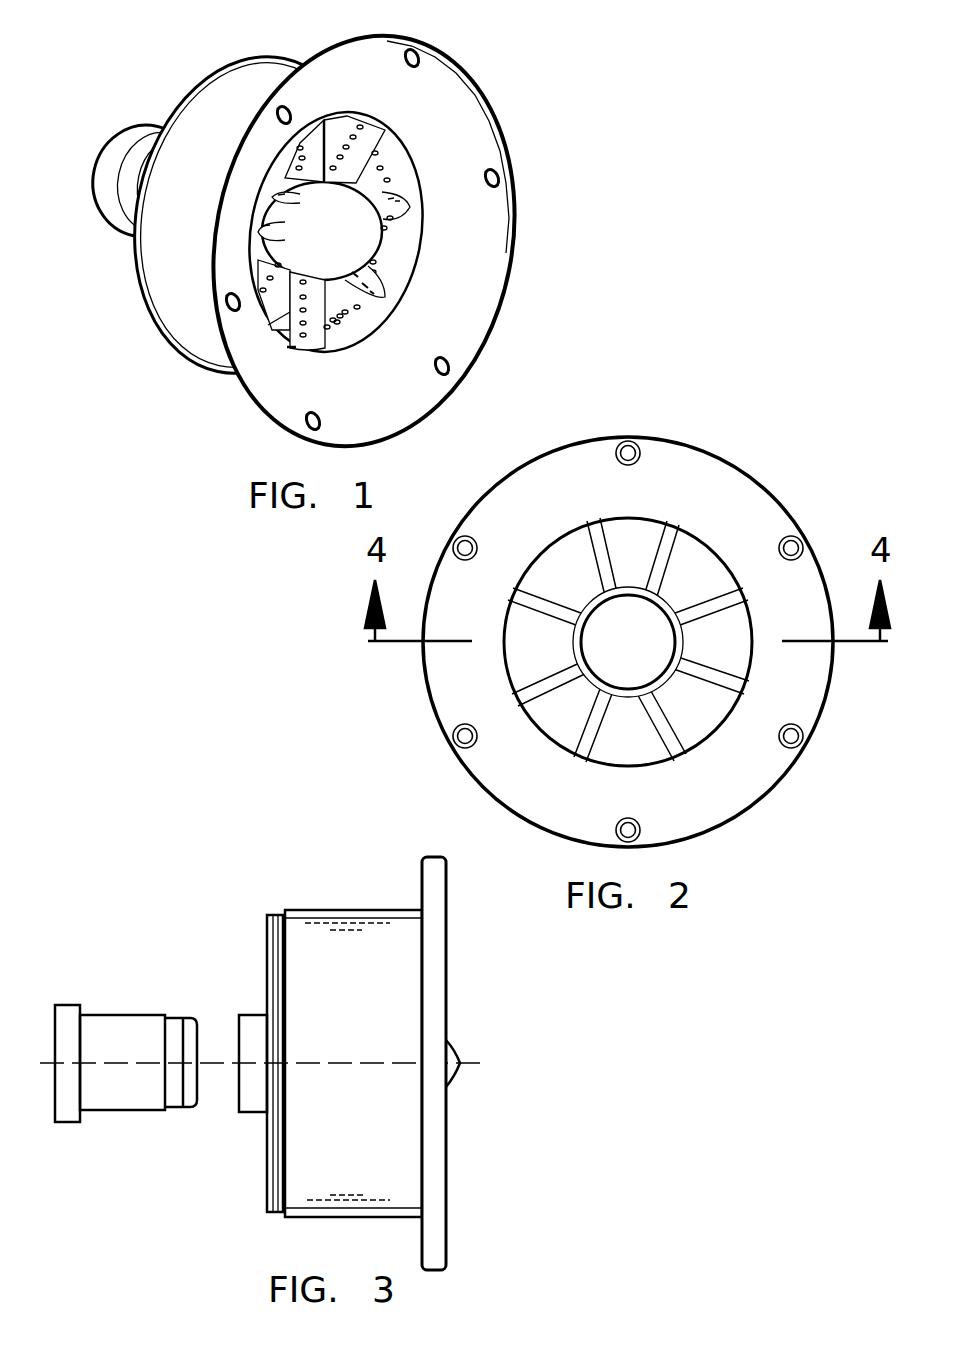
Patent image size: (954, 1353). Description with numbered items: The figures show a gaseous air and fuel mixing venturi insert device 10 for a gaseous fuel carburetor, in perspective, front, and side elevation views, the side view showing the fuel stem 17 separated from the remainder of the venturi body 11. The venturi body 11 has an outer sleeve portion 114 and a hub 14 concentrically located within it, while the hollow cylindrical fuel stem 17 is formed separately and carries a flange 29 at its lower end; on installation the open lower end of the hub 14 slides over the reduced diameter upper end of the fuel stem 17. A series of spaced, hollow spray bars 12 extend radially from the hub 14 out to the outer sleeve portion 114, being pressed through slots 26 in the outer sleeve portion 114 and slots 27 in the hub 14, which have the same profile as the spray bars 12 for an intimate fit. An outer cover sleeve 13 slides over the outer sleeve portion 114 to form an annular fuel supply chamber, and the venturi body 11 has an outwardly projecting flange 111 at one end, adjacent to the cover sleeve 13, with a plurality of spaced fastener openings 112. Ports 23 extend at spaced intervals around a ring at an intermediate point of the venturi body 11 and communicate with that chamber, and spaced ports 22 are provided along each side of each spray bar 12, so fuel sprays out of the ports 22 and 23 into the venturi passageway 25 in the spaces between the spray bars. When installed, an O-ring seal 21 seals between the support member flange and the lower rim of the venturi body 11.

In FIG. 1, the venturi insert device 10 is at (505, 74).
In FIG. 1, the venturi body 11 is at (478, 152).
In FIG. 1, the flange 111 is at (392, 48).
In FIG. 3, the flange 111 is at (432, 855).
In FIG. 1, the fastener openings 112 is at (307, 417).
In FIG. 2, the fastener openings 112 is at (620, 445).
In FIG. 2, the outer sleeve portion 114 is at (690, 465).
In FIG. 1, the spray bars 12 is at (398, 208).
In FIG. 2, the spray bars 12 is at (588, 740).
In FIG. 1, the outer cover sleeve 13 is at (270, 72).
In FIG. 3, the outer cover sleeve 13 is at (328, 908).
In FIG. 1, the hub 14 is at (363, 235).
In FIG. 2, the hub 14 is at (635, 622).
In FIG. 3, the hub 14 is at (458, 1055).
In FIG. 1, the fuel stem 17 is at (128, 198).
In FIG. 3, the fuel stem 17 is at (113, 1022).
In FIG. 1, the O-ring seal 21 is at (147, 307).
In FIG. 1, the ports 22 is at (302, 322).
In FIG. 1, the ports 23 is at (340, 317).
In FIG. 2, the venturi passageway 25 is at (638, 537).
In FIG. 1, the slots 26 is at (362, 296).
In FIG. 1, the slots 27 is at (262, 208).
In FIG. 1, the flange 29 is at (141, 126).